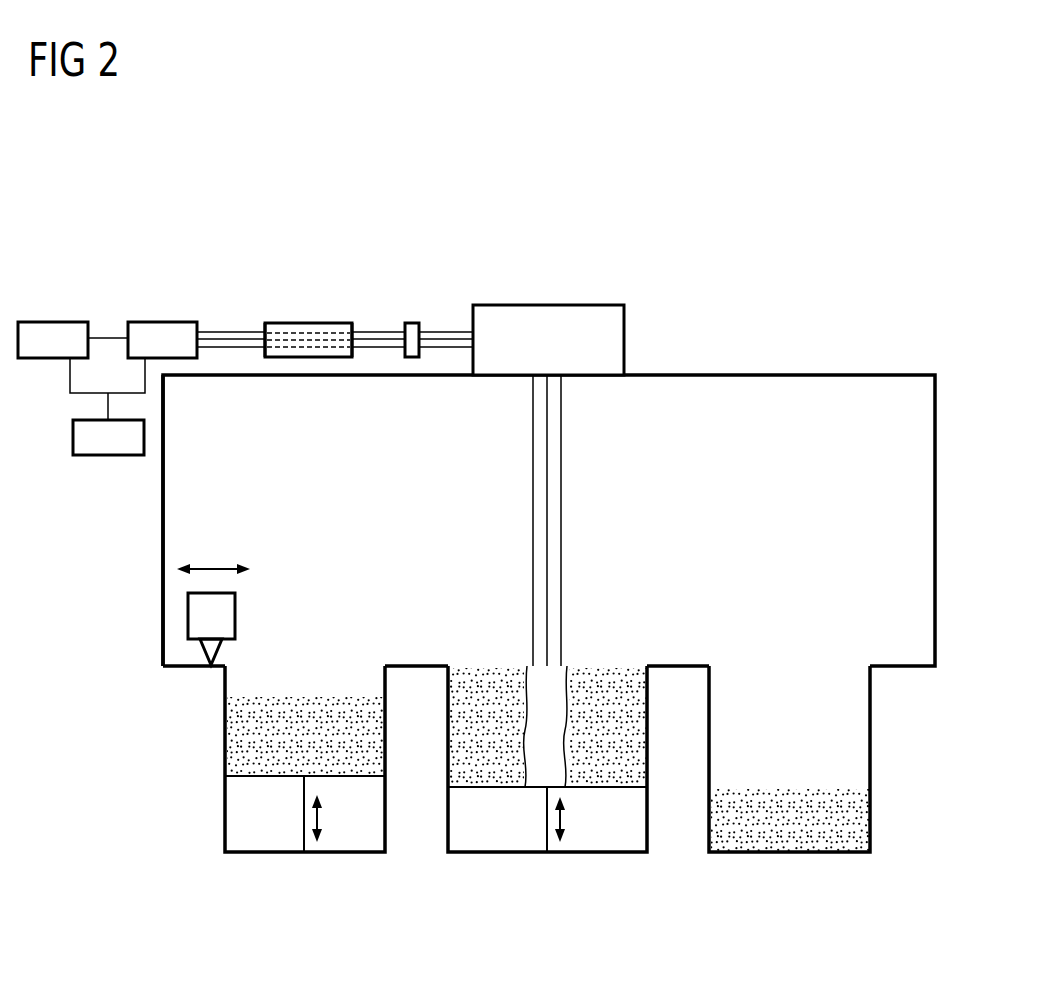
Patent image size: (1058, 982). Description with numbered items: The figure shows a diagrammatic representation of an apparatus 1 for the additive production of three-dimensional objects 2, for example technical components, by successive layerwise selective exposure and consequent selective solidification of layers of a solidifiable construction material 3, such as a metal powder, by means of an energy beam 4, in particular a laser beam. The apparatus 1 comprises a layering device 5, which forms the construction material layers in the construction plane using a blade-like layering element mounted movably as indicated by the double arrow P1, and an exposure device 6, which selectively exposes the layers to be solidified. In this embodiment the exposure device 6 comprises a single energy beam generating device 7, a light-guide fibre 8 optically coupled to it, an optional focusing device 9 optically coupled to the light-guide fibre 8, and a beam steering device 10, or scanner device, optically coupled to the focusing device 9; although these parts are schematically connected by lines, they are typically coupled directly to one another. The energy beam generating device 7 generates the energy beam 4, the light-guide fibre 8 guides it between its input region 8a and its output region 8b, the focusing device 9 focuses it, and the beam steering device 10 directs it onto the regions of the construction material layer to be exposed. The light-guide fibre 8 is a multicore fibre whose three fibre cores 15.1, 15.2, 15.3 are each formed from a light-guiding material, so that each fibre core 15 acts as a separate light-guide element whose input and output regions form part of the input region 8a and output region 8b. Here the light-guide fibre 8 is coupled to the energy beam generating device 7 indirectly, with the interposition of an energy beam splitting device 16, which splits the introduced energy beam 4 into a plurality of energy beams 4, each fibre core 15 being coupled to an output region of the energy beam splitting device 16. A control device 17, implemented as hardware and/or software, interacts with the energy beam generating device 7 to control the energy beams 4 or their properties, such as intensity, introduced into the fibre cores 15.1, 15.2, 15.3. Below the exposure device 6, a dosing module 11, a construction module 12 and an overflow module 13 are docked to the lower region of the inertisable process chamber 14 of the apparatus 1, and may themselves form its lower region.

The apparatus 1 is at (800, 150).
The three-dimensional object 2 is at (555, 713).
The construction material 3 is at (245, 727).
The energy beam 4 is at (228, 196).
The layering device 5 is at (262, 600).
The exposure device 6 is at (408, 220).
The energy beam generating device 7 is at (48, 360).
The light-guide fibre 8 is at (314, 338).
The input region 8a is at (250, 323).
The output region 8b is at (350, 323).
The focusing device 9 is at (410, 323).
The beam steering device 10 is at (545, 305).
The dosing module 11 is at (258, 878).
The construction module 12 is at (494, 878).
The overflow module 13 is at (748, 878).
The process chamber 14 is at (163, 600).
The fibre core 15 is at (314, 338).
The fibre core 15.1 is at (283, 355).
The fibre core 15.2 is at (315, 342).
The fibre core 15.3 is at (335, 355).
The energy beam splitting device 16 is at (163, 322).
The control device 17 is at (108, 457).
The double arrow P1 is at (212, 565).